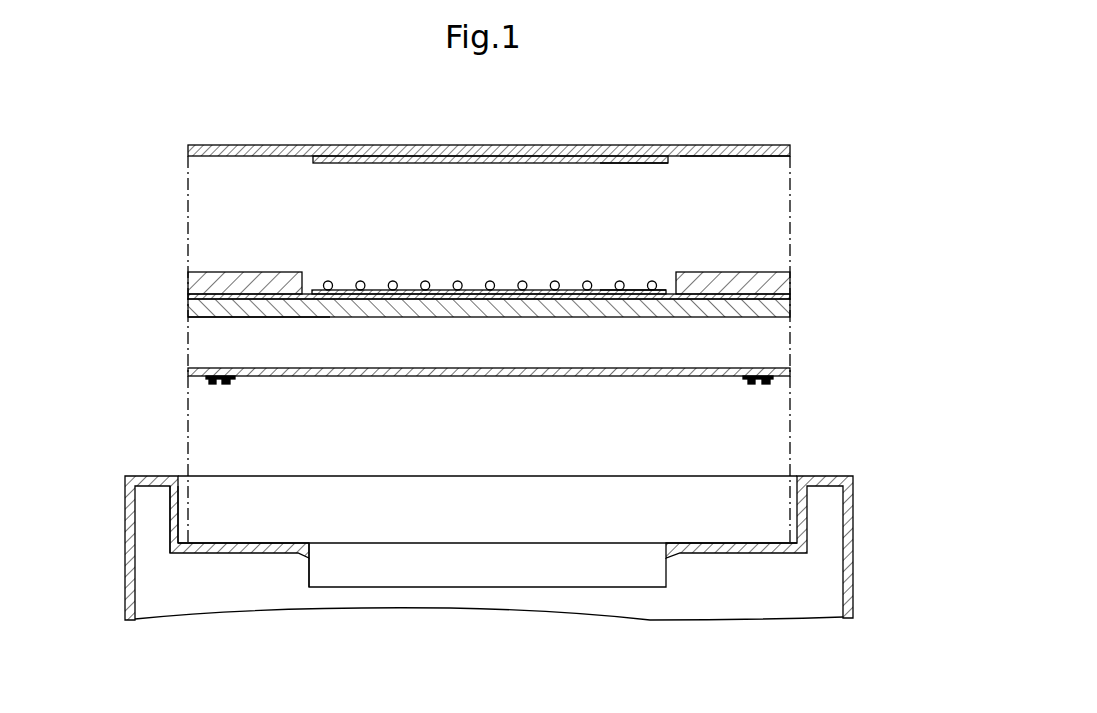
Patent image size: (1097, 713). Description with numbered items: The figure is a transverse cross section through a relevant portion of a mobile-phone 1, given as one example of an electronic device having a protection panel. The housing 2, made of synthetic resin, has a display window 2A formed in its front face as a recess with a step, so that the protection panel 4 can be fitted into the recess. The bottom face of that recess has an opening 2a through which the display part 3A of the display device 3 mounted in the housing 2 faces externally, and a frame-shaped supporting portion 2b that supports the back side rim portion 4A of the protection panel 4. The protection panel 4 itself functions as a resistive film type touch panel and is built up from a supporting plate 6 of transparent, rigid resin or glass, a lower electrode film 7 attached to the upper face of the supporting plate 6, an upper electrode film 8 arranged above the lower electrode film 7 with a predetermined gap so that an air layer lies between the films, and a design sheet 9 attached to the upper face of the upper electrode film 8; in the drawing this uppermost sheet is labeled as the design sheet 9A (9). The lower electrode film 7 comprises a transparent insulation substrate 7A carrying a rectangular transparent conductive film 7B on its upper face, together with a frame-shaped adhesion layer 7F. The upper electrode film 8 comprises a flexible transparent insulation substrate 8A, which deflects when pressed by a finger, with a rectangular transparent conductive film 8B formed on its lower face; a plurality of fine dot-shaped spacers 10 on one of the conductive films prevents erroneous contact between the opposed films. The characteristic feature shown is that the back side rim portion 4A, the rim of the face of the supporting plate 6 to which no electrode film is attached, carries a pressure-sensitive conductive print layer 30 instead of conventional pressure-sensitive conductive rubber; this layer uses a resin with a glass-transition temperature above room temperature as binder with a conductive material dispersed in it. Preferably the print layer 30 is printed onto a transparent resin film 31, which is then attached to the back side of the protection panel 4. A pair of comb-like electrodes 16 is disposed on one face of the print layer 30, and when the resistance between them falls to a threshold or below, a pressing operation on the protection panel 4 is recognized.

The mobile-phone 1 is at (160, 280).
The housing 2 is at (829, 477).
The display window 2A is at (178, 502).
The opening 2a is at (310, 548).
The supporting portion 2b is at (263, 544).
The display device 3 is at (538, 563).
The display part 3A is at (394, 533).
The protection panel 4 is at (799, 144).
The back side rim portion 4A is at (266, 322).
The supporting plate 6 is at (560, 312).
The lower electrode film 7 is at (343, 284).
The transparent insulation substrate 7A is at (279, 294).
The transparent conductive film 7B is at (636, 290).
The adhesion layer 7F is at (252, 271).
The upper electrode film 8 is at (452, 169).
The flexible transparent insulation substrate 8A is at (720, 157).
The transparent conductive film 8B is at (611, 163).
The design sheet 9 is at (489, 126).
The cover plate 9A is at (384, 145).
The spacer 10 is at (521, 282).
The comb-like electrodes 16 is at (229, 384).
The pressure-sensitive conductive print layer 30 is at (205, 380).
The transparent resin film 31 is at (433, 377).